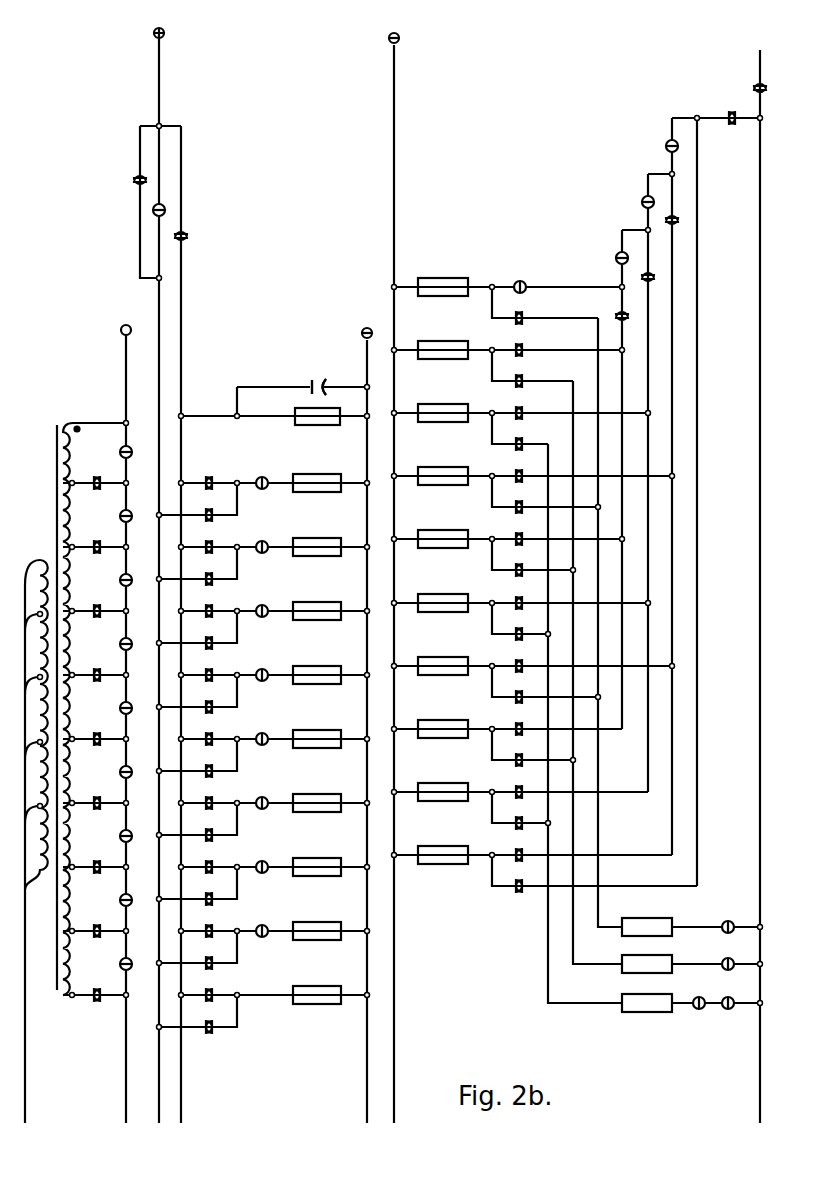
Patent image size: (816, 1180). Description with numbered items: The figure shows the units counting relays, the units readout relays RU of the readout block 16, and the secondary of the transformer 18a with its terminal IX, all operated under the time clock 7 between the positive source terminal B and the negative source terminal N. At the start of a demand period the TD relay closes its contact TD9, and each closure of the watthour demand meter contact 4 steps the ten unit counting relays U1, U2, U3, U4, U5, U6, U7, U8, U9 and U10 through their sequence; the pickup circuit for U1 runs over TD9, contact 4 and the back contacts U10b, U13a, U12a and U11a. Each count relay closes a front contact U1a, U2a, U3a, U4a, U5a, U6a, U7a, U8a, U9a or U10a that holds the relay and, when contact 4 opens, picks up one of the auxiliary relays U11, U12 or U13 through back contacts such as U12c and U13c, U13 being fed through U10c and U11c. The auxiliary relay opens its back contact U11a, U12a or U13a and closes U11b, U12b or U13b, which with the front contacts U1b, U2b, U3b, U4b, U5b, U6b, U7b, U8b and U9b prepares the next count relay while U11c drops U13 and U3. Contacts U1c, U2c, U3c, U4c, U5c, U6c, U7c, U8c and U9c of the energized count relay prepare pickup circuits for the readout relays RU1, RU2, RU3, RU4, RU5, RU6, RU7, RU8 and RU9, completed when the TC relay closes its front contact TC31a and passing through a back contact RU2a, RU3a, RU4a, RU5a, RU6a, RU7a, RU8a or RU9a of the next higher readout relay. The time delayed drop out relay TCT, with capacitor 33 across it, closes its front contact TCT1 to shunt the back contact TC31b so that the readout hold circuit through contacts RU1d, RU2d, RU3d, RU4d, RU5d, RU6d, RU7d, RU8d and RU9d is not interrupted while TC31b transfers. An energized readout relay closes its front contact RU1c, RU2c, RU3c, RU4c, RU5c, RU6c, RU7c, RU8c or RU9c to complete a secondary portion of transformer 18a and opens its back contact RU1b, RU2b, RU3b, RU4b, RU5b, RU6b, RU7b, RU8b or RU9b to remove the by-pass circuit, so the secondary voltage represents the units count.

The positive source terminal B is at (158, 23).
The negative source terminal N is at (380, 176).
The transformer secondary terminal IX is at (125, 321).
The transformer 18a is at (46, 439).
The readout relays block 16 is at (226, 377).
The units readout relays RU is at (282, 336).
The time clock 7 is at (447, 231).
The capacitor 33 is at (320, 376).
The contact member of watthour demand meter 4 is at (732, 128).
The time delayed drop out relay TCT is at (317, 416).
The front contact of TCT relay TCT1 is at (133, 181).
The back contact of TC relay TC31b is at (166, 208).
The front contact of TC relay TC31a is at (205, 238).
The contact of TD relay TD9 is at (741, 91).
The back contact of U10 relay U10b is at (652, 147).
The back contact of U13 relay U13a is at (627, 203).
The front contact of U13 relay U13b is at (680, 221).
The back contact of U12 relay U12a is at (603, 259).
The front contact of U12 relay U12b is at (640, 278).
The back contact of U11 relay U11a is at (518, 276).
The front contact of U11 relay U11b is at (619, 312).
The back contact of U12 relay U12c is at (723, 918).
The back contact of U13 relay U13c is at (718, 955).
The relay contact U10c is at (728, 995).
The back contact of U11 relay U11c is at (699, 1011).
The back contact of readout relay RU1 RU1b is at (120, 451).
The front contact of readout relay RU1 RU1c is at (110, 478).
The back contact of readout relay RU2 RU2b is at (120, 515).
The front contact of readout relay RU2 RU2c is at (110, 542).
The back contact of readout relay RU3 RU3b is at (120, 579).
The front contact of readout relay RU3 RU3c is at (110, 606).
The back contact of readout relay RU4 RU4b is at (120, 643).
The front contact of readout relay RU4 RU4c is at (110, 670).
The back contact of readout relay RU5 RU5b is at (120, 707).
The front contact of readout relay RU5 RU5c is at (110, 734).
The back contact of readout relay RU6 RU6b is at (120, 771).
The front contact of readout relay RU6 RU6c is at (110, 798).
The back contact of readout relay RU7 RU7b is at (120, 835).
The front contact of readout relay RU7 RU7c is at (110, 862).
The back contact of readout relay RU8 RU8b is at (120, 899).
The front contact of readout relay RU8 RU8c is at (110, 926).
The back contact of readout relay RU9 RU9b is at (120, 963).
The front contact of readout relay RU9 RU9c is at (88, 1009).
The contact of count relay U1 U1c is at (208, 474).
The contact of count relay U2 U2c is at (211, 540).
The contact of count relay U3 U3c is at (211, 604).
The contact of count relay U4 U4c is at (211, 668).
The contact of count relay U5 U5c is at (211, 732).
The contact of count relay U6 U6c is at (211, 796).
The contact of count relay U7 U7c is at (211, 860).
The contact of count relay U8 U8c is at (211, 924).
The contact of count relay U9 U9c is at (211, 988).
The contact of readout relay RU1 RU1d is at (222, 521).
The contact of readout relay RU2 RU2d is at (222, 585).
The contact of readout relay RU3 RU3d is at (222, 649).
The contact of readout relay RU4 RU4d is at (222, 713).
The contact of readout relay RU5 RU5d is at (222, 777).
The contact of readout relay RU6 RU6d is at (222, 841).
The contact of readout relay RU7 RU7d is at (222, 905).
The contact of readout relay RU8 RU8d is at (222, 969).
The contact of readout relay RU9 RU9d is at (222, 1040).
The back contact of readout relay RU2 RU2a is at (262, 476).
The back contact of readout relay RU3 RU3a is at (262, 540).
The back contact of readout relay RU4 RU4a is at (262, 604).
The back contact of readout relay RU5 RU5a is at (262, 668).
The back contact of readout relay RU6 RU6a is at (262, 732).
The back contact of readout relay RU7 RU7a is at (262, 796).
The back contact of readout relay RU8 RU8a is at (262, 860).
The back contact of readout relay RU9 RU9a is at (262, 924).
The units readout relay RU1 is at (317, 483).
The units readout relay RU2 is at (317, 547).
The units readout relay RU3 is at (317, 611).
The units readout relay RU4 is at (317, 675).
The units readout relay RU5 is at (317, 739).
The units readout relay RU6 is at (317, 803).
The units readout relay RU7 is at (317, 867).
The units readout relay RU8 is at (317, 931).
The units readout relay RU9 is at (317, 995).
The units counting relay U1 is at (443, 287).
The units counting relay U2 is at (443, 350).
The units counting relay U3 is at (443, 413).
The units counting relay U4 is at (443, 476).
The units counting relay U5 is at (443, 539).
The units counting relay U6 is at (443, 603).
The units counting relay U7 is at (443, 666).
The units counting relay U8 is at (443, 729).
The units counting relay U9 is at (443, 792).
The units counting relay U10 is at (443, 855).
The auxiliary counting relay U11 is at (647, 927).
The auxiliary counting relay U12 is at (647, 964).
The auxiliary counting relay U13 is at (647, 1003).
The front contact of U1 relay U1a is at (513, 313).
The front contact of U2 relay U2a is at (515, 377).
The front contact of U3 relay U3a is at (515, 439).
The front contact of U4 relay U4a is at (505, 512).
The front contact of U5 relay U5a is at (505, 575).
The front contact of U6 relay U6a is at (505, 639).
The front contact of U7 relay U7a is at (505, 702).
The front contact of U8 relay U8a is at (505, 765).
The front contact of U9 relay U9a is at (505, 828).
The front contact of U10 relay U10a is at (513, 899).
The front contact of U1 relay U1b is at (515, 345).
The front contact of U2 relay U2b is at (519, 406).
The front contact of U3 relay U3b is at (519, 469).
The front contact of U4 relay U4b is at (519, 532).
The front contact of U5 relay U5b is at (519, 596).
The front contact of U6 relay U6b is at (519, 659).
The front contact of U7 relay U7b is at (519, 722).
The front contact of U8 relay U8b is at (519, 785).
The front contact of U9 relay U9b is at (519, 848).